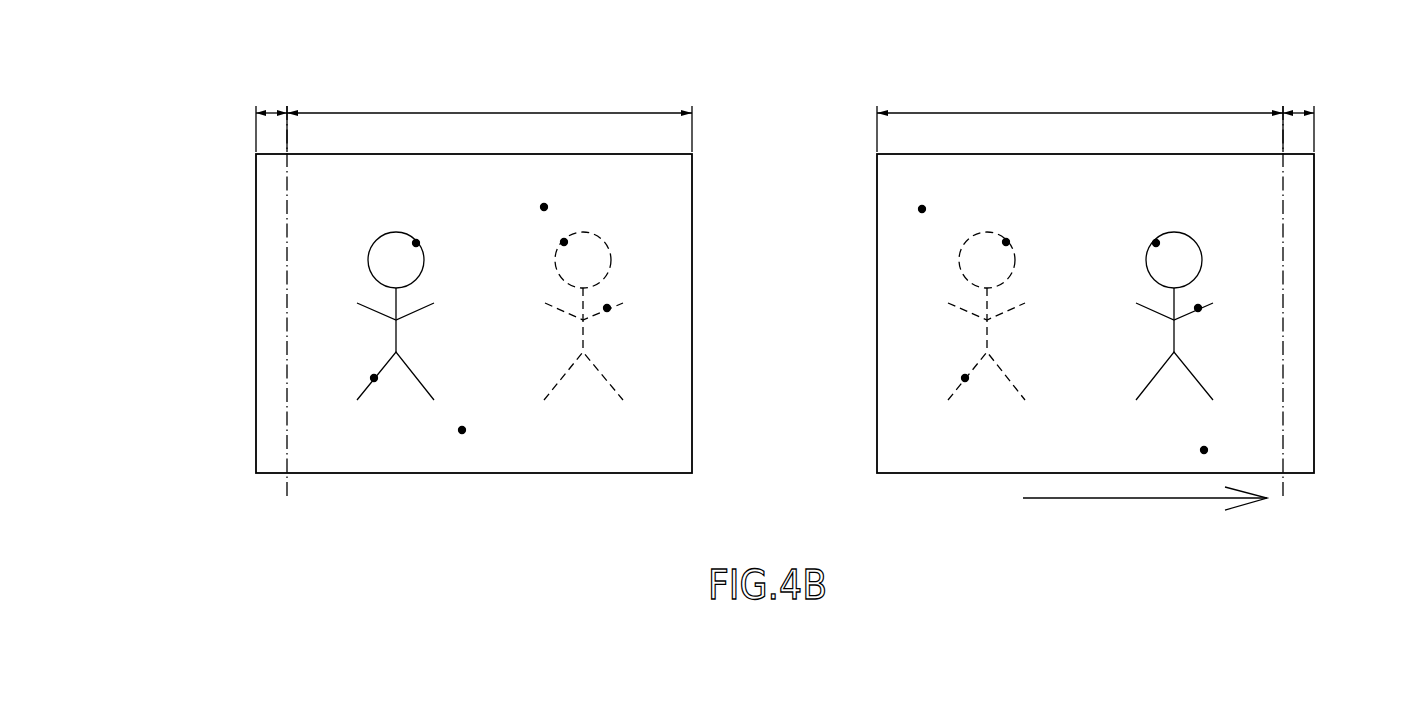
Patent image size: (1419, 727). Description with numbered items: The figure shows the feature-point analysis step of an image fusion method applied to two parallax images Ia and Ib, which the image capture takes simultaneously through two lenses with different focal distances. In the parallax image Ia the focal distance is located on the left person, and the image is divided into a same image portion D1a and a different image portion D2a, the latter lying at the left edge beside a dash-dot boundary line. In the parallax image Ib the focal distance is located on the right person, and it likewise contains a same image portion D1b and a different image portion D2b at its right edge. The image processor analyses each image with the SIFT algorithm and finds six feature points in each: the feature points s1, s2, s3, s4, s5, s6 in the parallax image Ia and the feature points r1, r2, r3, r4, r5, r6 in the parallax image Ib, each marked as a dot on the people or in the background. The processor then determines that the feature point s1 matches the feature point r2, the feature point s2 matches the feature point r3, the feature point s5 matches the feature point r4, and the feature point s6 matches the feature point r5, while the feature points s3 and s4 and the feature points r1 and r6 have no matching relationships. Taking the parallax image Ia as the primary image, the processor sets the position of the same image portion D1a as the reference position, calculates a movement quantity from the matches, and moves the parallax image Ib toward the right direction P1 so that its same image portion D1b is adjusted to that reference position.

The parallax image Ia is at (256, 323).
The parallax image Ib is at (1314, 314).
The same image portion D1a is at (488, 110).
The different image portion D2a is at (268, 110).
The same image portion D1b is at (1100, 110).
The different image portion D2b is at (1296, 110).
The feature point s1 is at (416, 243).
The feature point s2 is at (374, 378).
The feature point s3 is at (544, 207).
The feature point s4 is at (462, 430).
The feature point s5 is at (564, 242).
The feature point s6 is at (607, 308).
The feature point r1 is at (922, 209).
The feature point r2 is at (1006, 242).
The feature point r3 is at (965, 378).
The feature point r4 is at (1156, 243).
The feature point r5 is at (1198, 308).
The feature point r6 is at (1204, 450).
The right direction P1 is at (1145, 512).